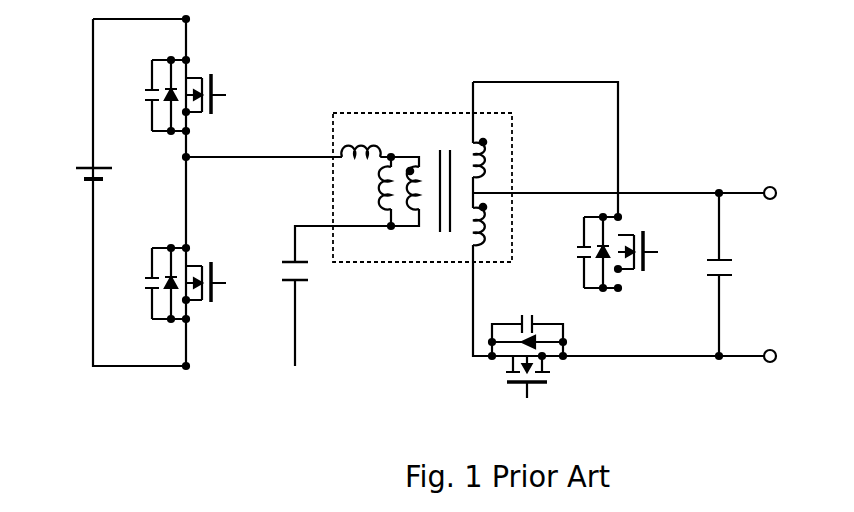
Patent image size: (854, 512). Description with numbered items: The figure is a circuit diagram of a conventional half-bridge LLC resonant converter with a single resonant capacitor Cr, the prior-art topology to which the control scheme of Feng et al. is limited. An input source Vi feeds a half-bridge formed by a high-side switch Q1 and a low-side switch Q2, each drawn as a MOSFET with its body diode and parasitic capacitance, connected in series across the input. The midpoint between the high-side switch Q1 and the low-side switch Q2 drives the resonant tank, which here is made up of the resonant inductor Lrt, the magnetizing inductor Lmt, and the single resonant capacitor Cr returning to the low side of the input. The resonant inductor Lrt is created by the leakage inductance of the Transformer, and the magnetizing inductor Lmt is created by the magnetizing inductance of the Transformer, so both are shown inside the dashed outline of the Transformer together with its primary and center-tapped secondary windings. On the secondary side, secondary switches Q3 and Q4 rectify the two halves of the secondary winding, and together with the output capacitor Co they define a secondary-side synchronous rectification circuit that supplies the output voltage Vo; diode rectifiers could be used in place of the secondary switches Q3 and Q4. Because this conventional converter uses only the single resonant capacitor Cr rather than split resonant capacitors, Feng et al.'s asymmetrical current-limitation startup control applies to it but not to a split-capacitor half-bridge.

The high-side switch Q1 is at (185, 100).
The low-side switch Q2 is at (185, 294).
The secondary switch Q3 is at (535, 363).
The secondary switch Q4 is at (617, 262).
The input voltage source Vi is at (79, 174).
The output voltage Vo is at (782, 271).
The single resonant capacitor Cr is at (304, 283).
The output capacitor Co is at (737, 274).
The resonant inductor Lrt is at (365, 141).
The magnetizing inductor Lmt is at (371, 188).
The transformer Transformer is at (422, 174).